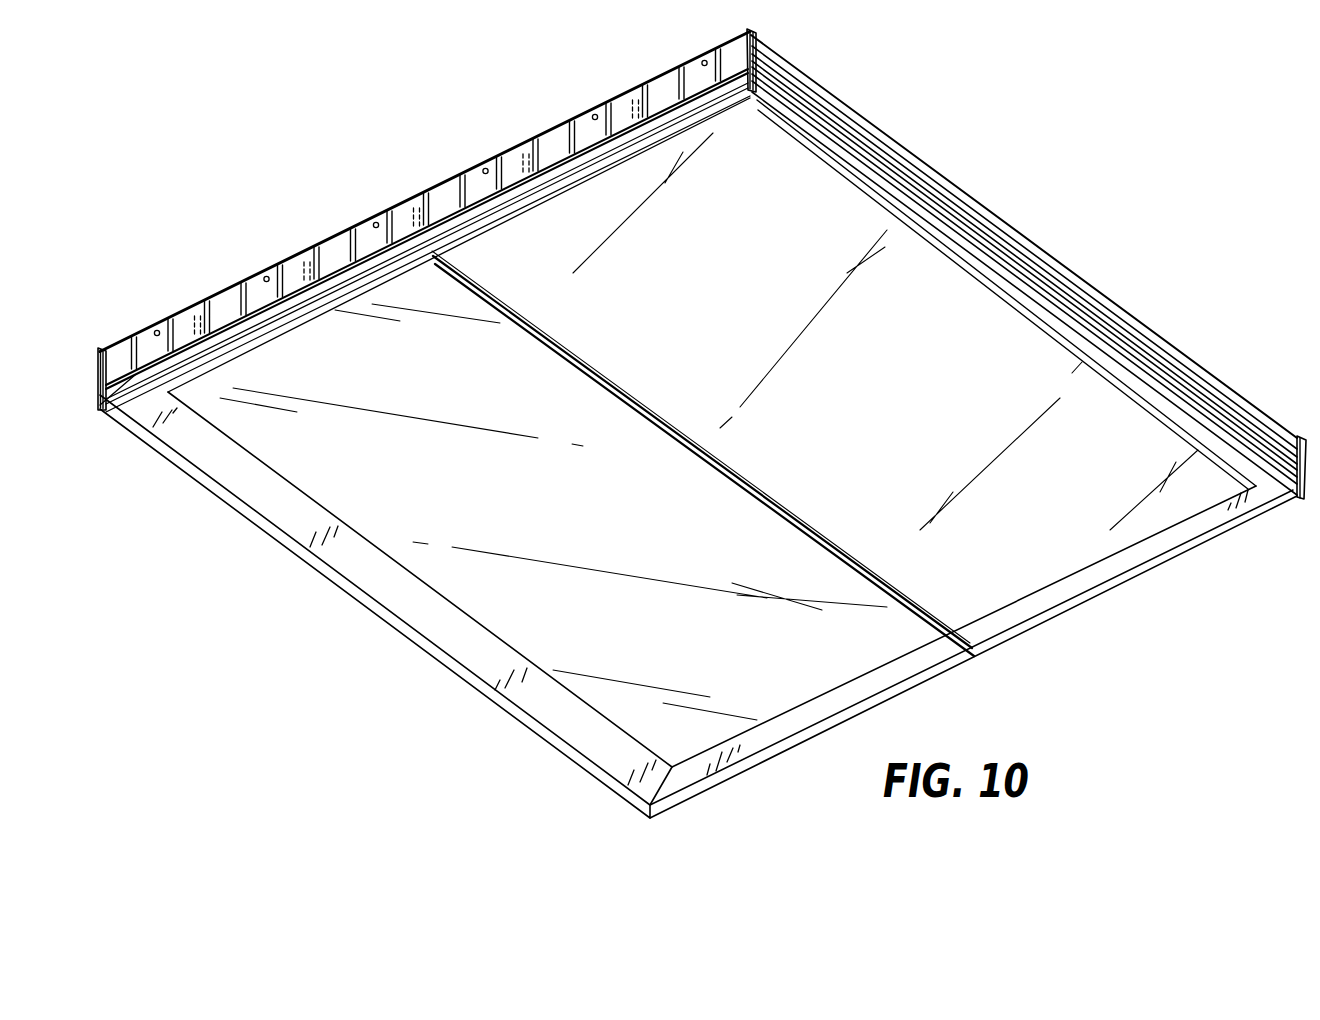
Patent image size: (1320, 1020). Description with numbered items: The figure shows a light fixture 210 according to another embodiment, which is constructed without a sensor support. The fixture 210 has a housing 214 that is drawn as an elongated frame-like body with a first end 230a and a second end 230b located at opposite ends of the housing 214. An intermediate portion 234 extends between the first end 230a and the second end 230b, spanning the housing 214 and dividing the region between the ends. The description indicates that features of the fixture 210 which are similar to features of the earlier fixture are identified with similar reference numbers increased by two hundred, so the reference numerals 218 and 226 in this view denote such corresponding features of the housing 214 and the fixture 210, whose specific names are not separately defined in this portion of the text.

The fixture 210 is at (702, 439).
The housing 214 is at (766, 757).
The glass panel 218 is at (972, 338).
The side rail 226 is at (1203, 393).
The first end 230a is at (1085, 606).
The second end 230b is at (515, 172).
The intermediate portion 234 is at (713, 457).